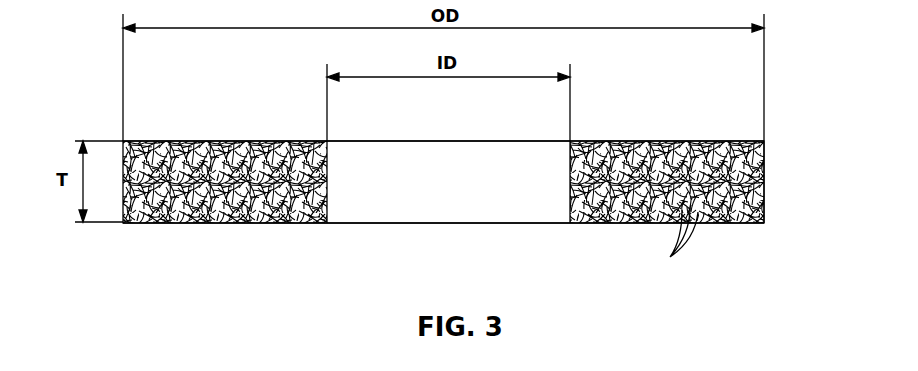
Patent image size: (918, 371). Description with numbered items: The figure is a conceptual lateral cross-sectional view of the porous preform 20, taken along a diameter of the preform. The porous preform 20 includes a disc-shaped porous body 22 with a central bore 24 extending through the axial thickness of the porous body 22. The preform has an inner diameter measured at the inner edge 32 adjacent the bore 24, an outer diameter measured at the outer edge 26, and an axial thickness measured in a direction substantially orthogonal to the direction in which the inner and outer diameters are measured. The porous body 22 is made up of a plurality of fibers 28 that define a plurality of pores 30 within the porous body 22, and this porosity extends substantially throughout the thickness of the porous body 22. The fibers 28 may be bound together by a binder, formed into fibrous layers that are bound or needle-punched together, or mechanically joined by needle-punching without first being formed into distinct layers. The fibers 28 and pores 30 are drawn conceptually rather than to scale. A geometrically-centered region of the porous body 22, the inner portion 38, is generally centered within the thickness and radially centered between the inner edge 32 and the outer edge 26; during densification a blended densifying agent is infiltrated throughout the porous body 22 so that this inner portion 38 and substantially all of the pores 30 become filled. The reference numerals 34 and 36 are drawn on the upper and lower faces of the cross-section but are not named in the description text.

The porous preform 20 is at (90, 120).
The disc-shaped porous body 22 is at (775, 175).
The central bore 24 is at (497, 156).
The outer edge 26 is at (765, 198).
The fibers 28 is at (672, 254).
The pores 30 is at (657, 142).
The inner edge 32 is at (327, 180).
The first surface 34 is at (225, 141).
The bottom surface 36 is at (247, 224).
The inner portion 38 is at (230, 174).